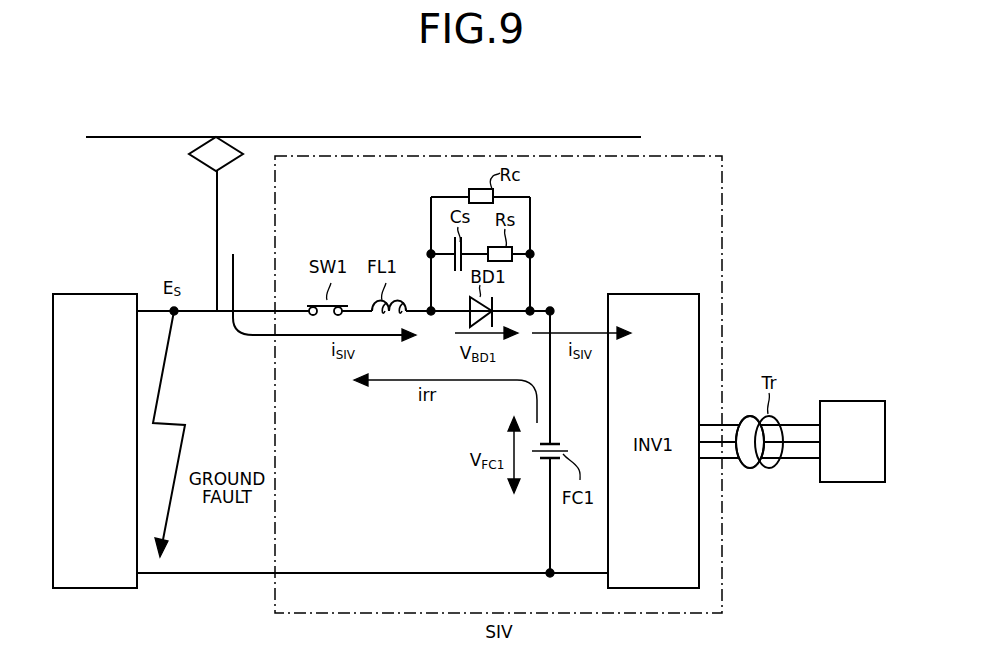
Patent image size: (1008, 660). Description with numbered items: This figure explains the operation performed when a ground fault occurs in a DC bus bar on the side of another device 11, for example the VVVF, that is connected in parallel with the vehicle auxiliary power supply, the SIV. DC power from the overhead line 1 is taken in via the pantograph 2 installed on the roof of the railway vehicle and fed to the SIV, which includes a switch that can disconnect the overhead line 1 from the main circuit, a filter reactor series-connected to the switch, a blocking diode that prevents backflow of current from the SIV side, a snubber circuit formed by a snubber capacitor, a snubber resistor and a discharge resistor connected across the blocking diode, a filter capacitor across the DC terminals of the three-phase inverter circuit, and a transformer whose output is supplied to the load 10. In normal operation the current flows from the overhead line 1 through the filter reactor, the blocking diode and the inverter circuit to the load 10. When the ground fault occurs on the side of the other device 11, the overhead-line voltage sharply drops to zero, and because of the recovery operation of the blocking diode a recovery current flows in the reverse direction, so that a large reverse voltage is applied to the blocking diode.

The overhead line 1 is at (258, 137).
The pantograph 2 is at (200, 164).
The load 10 is at (852, 401).
The another device 11 is at (102, 294).